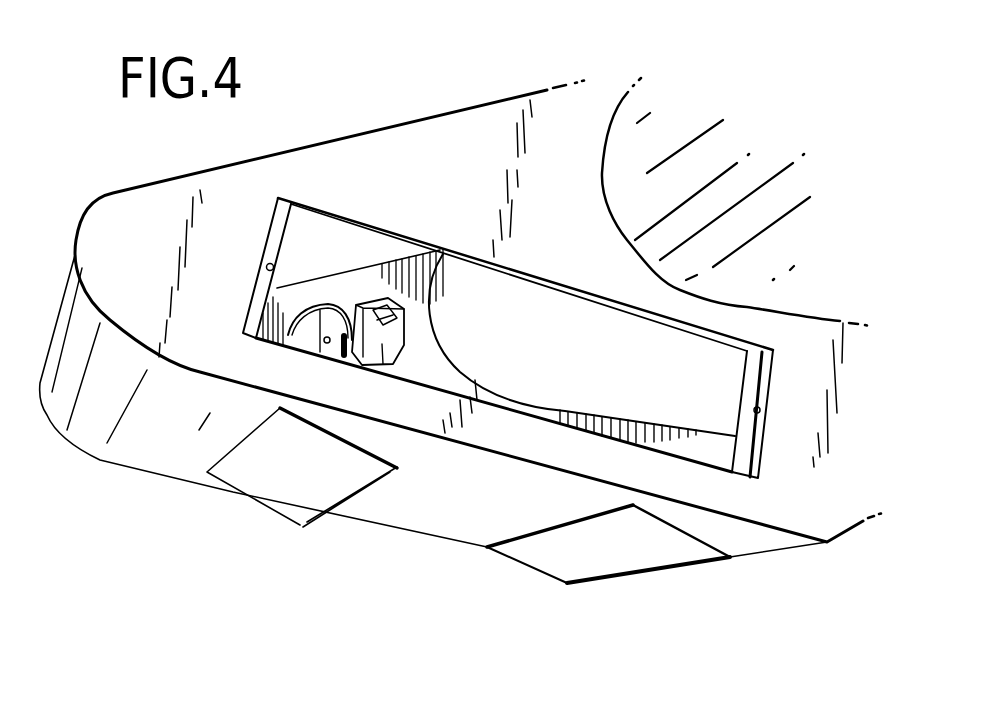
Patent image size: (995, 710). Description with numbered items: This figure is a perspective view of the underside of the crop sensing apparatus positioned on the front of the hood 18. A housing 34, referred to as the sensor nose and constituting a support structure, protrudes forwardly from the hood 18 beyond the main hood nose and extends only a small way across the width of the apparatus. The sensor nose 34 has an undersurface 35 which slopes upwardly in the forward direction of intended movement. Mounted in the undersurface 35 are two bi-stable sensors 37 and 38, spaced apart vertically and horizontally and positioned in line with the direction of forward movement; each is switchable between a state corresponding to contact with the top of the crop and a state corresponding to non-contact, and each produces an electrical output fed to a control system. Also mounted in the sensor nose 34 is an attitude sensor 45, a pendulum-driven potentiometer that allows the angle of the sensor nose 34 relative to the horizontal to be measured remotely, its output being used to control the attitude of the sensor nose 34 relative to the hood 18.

The hood 18 is at (660, 127).
The housing 34 is at (112, 224).
The undersurface 35 is at (400, 507).
The bi-stable sensor 37 is at (267, 475).
The bi-stable sensor 38 is at (547, 548).
The attitude sensor 45 is at (379, 286).